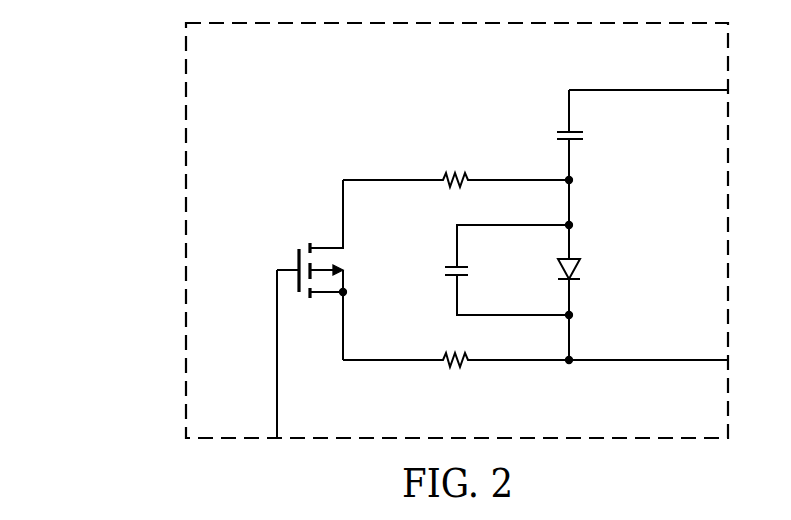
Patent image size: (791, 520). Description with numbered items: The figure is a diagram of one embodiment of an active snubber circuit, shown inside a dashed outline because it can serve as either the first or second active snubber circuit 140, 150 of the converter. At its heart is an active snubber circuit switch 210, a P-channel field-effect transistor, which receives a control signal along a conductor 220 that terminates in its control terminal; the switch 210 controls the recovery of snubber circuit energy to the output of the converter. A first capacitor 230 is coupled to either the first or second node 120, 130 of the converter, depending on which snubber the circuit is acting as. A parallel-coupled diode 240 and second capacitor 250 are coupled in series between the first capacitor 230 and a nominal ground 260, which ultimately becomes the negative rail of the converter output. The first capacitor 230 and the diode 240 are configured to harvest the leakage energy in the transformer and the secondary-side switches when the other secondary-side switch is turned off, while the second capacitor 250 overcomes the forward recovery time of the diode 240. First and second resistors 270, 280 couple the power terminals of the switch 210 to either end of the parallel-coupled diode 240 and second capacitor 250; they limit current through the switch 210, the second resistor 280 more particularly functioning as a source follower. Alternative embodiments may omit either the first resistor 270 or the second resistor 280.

The first node 120 is at (648, 59).
The second node 130 is at (647, 90).
The first active snubber circuit 140 is at (387, 230).
The second active snubber circuit 150 is at (185, 189).
The active snubber circuit switch 210 is at (297, 262).
The conductor 220 is at (275, 353).
The first capacitor 230 is at (584, 136).
The diode 240 is at (575, 272).
The second capacitor 250 is at (445, 269).
The nominal ground 260 is at (648, 362).
The first resistor 270 is at (458, 170).
The second resistor 280 is at (457, 370).